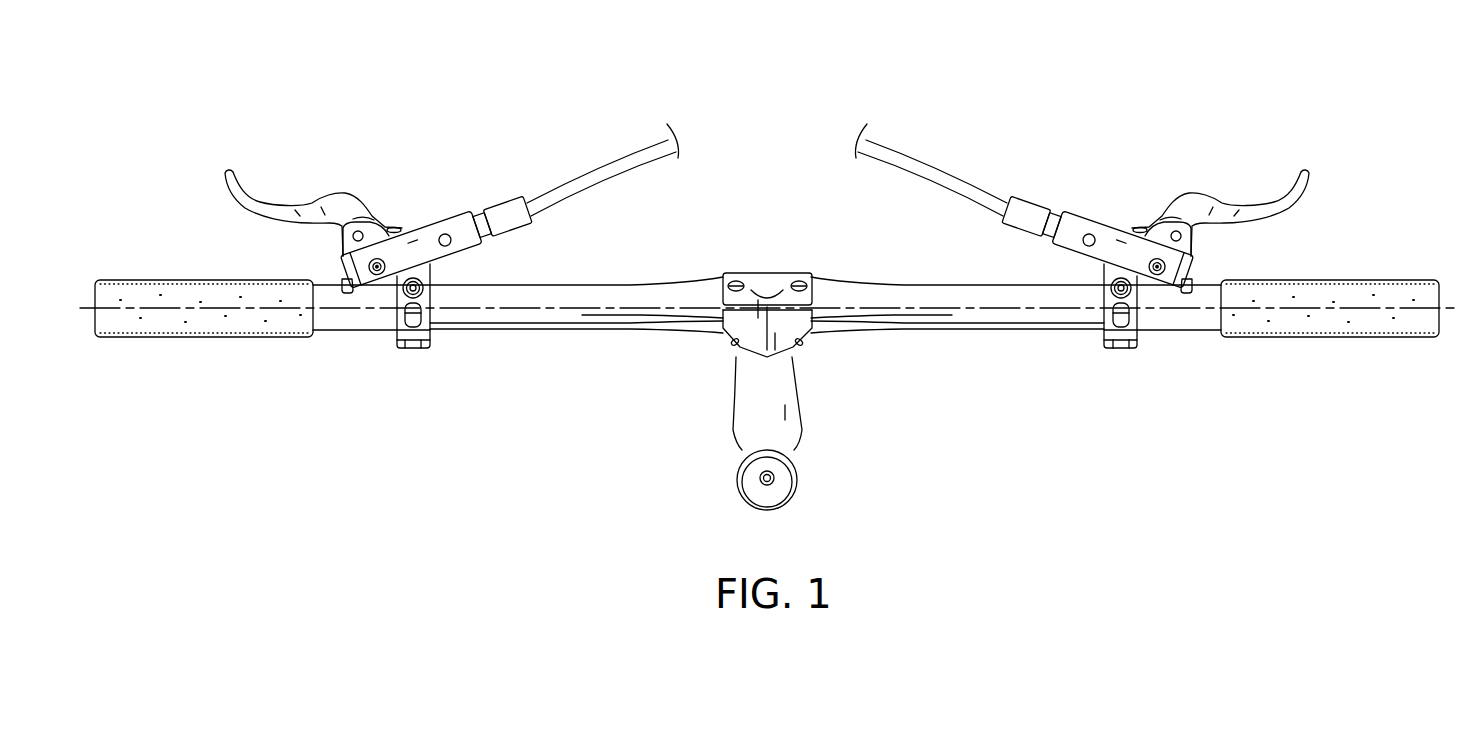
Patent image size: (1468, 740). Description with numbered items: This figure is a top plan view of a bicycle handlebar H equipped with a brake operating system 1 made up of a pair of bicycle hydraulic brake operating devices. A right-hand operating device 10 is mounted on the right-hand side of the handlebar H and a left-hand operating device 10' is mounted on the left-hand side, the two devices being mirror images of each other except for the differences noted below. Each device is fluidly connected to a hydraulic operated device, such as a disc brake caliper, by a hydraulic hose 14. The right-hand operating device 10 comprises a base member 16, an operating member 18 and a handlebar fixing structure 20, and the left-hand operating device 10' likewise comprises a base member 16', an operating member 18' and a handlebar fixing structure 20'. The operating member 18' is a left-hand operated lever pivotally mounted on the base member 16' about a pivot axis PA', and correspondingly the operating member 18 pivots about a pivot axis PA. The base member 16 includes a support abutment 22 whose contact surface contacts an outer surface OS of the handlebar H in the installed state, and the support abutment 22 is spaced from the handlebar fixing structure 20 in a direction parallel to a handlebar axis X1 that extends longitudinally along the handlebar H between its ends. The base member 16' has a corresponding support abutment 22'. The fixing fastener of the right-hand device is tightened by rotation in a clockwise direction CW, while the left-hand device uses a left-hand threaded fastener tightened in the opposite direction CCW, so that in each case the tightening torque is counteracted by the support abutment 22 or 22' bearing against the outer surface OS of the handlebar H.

The brake operating system 1 is at (1203, 42).
The right-hand operating device 10 is at (1149, 280).
The left-hand operating device 10' is at (386, 279).
The hydraulic hose 14 is at (611, 168).
The base member 16 is at (1097, 221).
The base member 16' is at (436, 221).
The operating member 18 is at (1220, 195).
The operating member 18' is at (313, 194).
The handlebar fixing structure 20 is at (1116, 345).
The handlebar fixing structure 20' is at (420, 345).
The support abutment 22 is at (1188, 325).
The support abutment 22' is at (348, 325).
The pivot axis PA is at (1213, 246).
The pivot axis PA' is at (320, 244).
The clockwise direction CW is at (1098, 265).
The counterclockwise direction CCW is at (436, 265).
The handlebar H is at (597, 283).
The outer surface OS is at (517, 317).
The handlebar axis X1 is at (1040, 309).